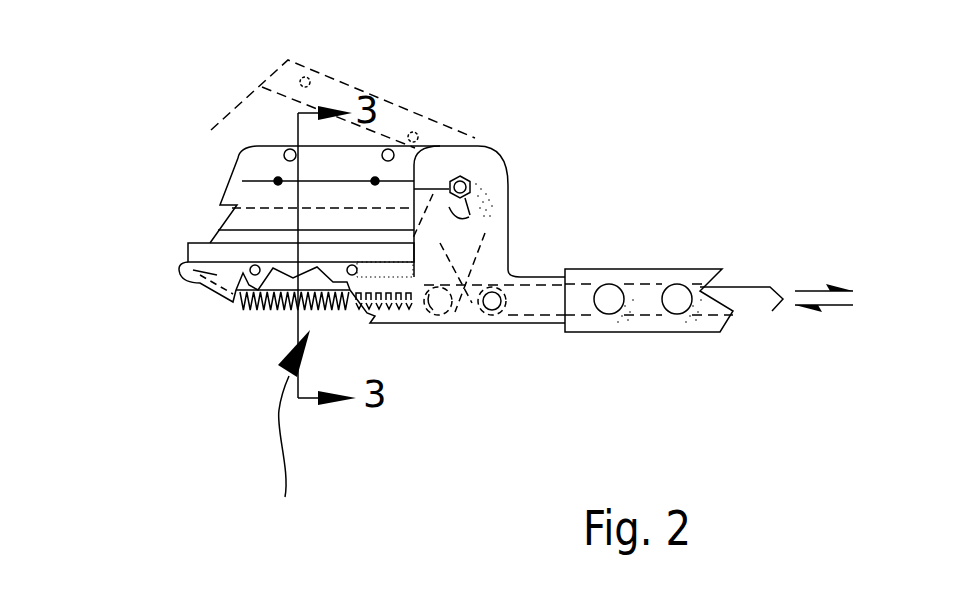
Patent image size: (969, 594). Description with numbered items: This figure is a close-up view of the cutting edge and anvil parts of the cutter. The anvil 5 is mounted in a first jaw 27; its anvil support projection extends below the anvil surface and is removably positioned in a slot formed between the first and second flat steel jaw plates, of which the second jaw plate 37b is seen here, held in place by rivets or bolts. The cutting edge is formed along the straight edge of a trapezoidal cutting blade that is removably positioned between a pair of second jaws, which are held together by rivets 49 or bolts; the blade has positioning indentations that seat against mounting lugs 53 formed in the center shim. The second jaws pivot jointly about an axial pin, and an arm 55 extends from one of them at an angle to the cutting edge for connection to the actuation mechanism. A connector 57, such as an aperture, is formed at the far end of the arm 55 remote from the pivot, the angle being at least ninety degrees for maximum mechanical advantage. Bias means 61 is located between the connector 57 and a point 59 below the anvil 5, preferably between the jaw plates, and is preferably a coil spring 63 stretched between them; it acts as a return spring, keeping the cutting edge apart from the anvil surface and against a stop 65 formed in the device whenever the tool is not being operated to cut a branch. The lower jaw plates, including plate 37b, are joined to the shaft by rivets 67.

The anvil 5 is at (223, 252).
The first jaw 27 is at (197, 282).
The second flat steel jaw plate 37b is at (465, 318).
The rivets 49 is at (390, 149).
The mounting lugs 53 is at (375, 180).
The arm 55 is at (488, 272).
The connector 57 is at (497, 301).
The point 59 is at (250, 293).
The bias means 61 is at (296, 547).
The coil spring 63 is at (400, 310).
The stop 65 is at (414, 267).
The rivets 67 is at (610, 303).